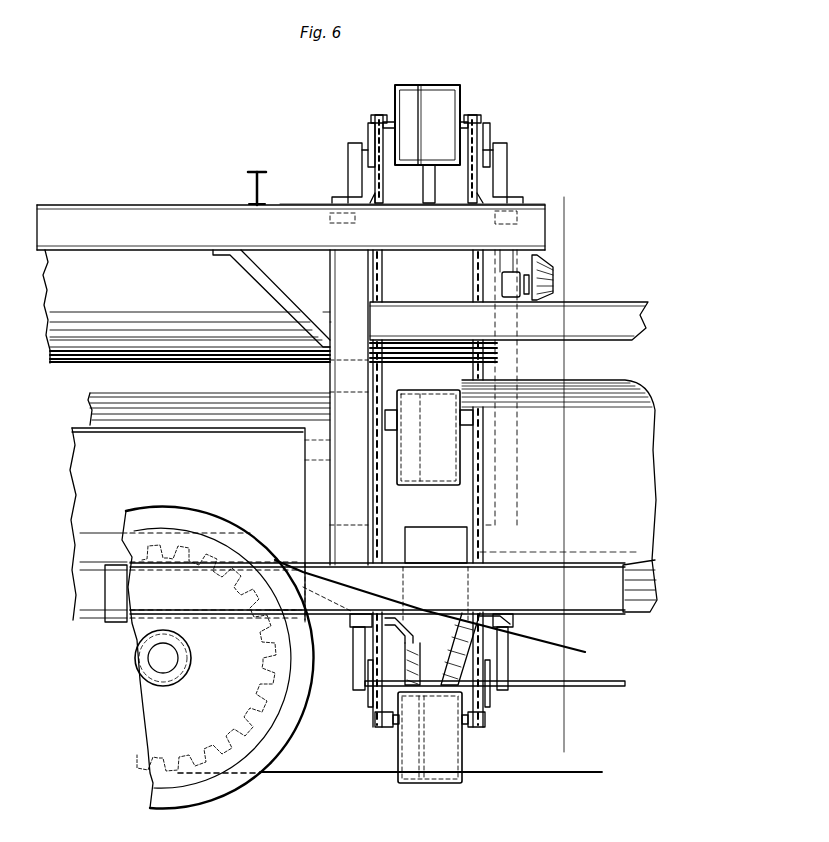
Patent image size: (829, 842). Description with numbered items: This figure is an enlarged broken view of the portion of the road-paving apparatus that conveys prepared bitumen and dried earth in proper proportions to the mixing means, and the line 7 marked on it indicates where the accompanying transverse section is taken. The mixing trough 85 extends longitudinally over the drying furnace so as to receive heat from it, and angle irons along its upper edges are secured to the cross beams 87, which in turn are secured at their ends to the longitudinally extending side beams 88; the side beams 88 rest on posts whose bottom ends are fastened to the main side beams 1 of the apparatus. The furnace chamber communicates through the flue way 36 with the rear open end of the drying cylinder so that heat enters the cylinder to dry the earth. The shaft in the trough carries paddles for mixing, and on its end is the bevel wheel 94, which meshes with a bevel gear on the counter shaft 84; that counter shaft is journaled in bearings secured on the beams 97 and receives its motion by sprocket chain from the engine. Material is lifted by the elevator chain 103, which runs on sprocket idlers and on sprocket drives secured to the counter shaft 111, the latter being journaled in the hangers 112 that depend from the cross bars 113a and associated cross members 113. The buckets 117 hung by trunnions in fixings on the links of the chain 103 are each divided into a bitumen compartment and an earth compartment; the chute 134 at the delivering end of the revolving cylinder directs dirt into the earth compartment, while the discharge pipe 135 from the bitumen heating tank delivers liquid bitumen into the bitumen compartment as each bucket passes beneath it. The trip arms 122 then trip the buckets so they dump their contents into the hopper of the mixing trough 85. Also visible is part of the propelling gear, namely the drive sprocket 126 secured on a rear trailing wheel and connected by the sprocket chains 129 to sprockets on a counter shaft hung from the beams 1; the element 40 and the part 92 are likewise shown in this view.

The side beams 1 is at (643, 620).
The section line 7— 7 is at (562, 466).
The flue way 36 is at (446, 522).
The shaft 40 is at (502, 298).
The counter shaft 84 is at (342, 368).
The mixing trough 85 is at (270, 436).
The cross beams 87 is at (258, 171).
The side beams 88 is at (58, 218).
The bearing 92 is at (513, 270).
The bevel wheel 94 is at (551, 280).
The beams 97 is at (590, 318).
The elevator chain 103 is at (478, 468).
The counter shaft 111 is at (590, 687).
The hangers 112 is at (355, 652).
The lower beam 113 is at (377, 606).
The cross bars 113a is at (358, 628).
The buckets 117 is at (450, 456).
The trip arms 122 is at (427, 181).
The drive sprocket 126 is at (207, 762).
The sprocket chains 129 is at (342, 775).
The chute 134 is at (417, 628).
The discharge pipe 135 is at (410, 647).